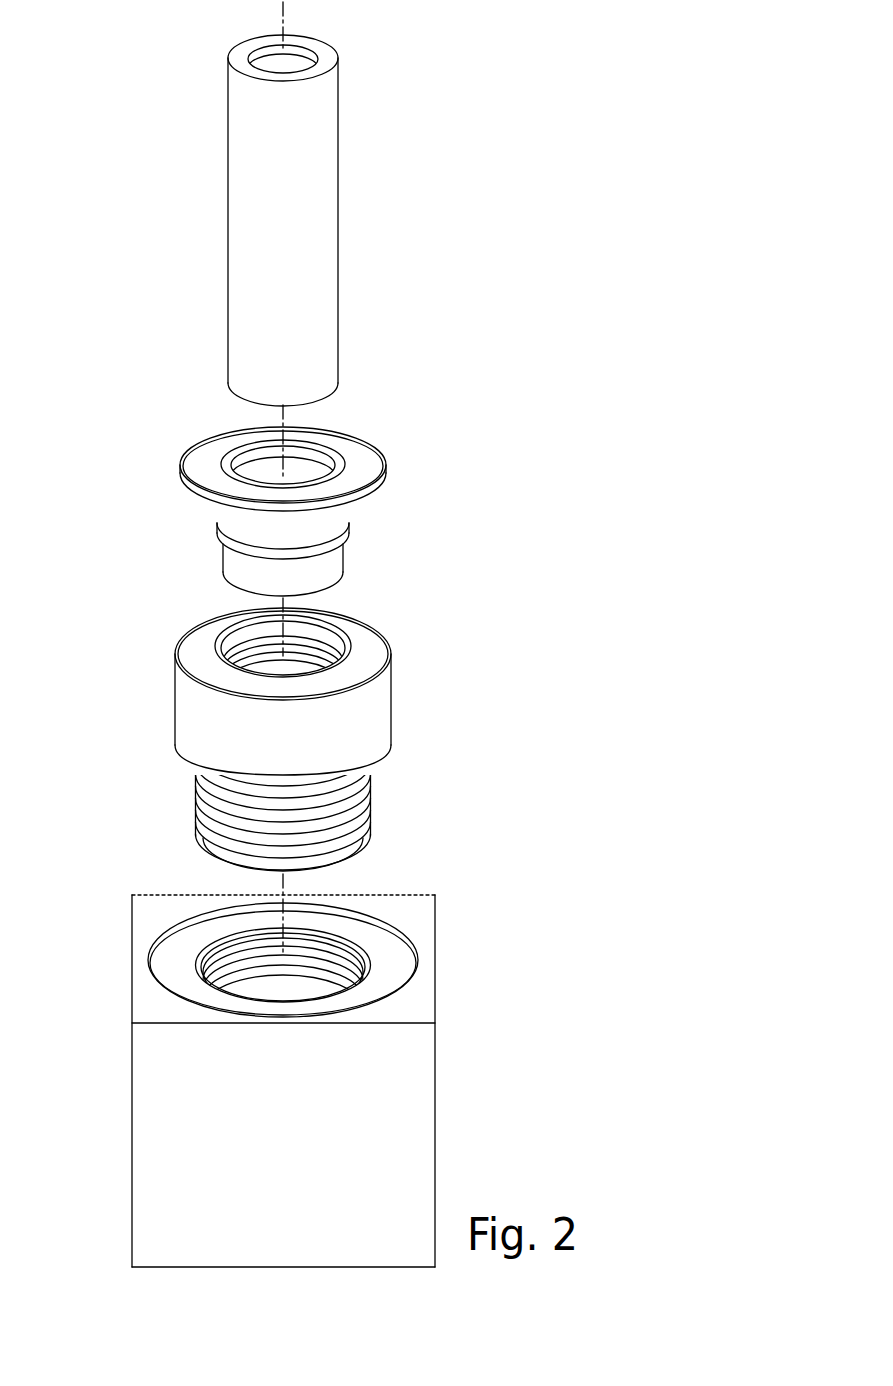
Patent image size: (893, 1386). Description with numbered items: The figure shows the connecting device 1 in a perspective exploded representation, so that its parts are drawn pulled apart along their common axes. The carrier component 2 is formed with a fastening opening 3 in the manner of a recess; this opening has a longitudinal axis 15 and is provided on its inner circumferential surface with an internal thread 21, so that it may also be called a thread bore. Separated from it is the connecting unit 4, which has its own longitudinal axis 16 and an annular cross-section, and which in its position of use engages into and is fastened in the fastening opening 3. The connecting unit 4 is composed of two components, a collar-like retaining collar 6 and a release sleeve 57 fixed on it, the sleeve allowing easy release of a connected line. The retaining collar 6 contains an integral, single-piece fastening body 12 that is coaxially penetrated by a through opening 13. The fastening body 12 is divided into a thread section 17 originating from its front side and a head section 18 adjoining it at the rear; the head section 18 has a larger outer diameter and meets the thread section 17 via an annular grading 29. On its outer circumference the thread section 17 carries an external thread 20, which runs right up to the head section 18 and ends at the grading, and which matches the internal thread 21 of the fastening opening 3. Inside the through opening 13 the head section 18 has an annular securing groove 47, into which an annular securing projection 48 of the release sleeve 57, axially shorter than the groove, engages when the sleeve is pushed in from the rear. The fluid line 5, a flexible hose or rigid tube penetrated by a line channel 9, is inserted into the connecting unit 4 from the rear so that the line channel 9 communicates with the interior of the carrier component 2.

The connecting device 1 is at (497, 272).
The carrier component 2 is at (423, 1113).
The fastening opening 3 is at (222, 983).
The connecting unit 4 is at (473, 415).
The fluid line 5 is at (310, 195).
The retaining collar 6 is at (265, 716).
The line channel 9 is at (300, 57).
The fastening body 12 is at (275, 703).
The through opening 13 is at (318, 653).
The longitudinal axis 15 is at (283, 923).
The longitudinal axis 16 is at (286, 462).
The thread section 17 is at (215, 815).
The head section 18 is at (188, 700).
The external thread 20 is at (372, 795).
The internal thread 21 is at (335, 968).
The annular grading 29 is at (190, 770).
The securing groove 47 is at (240, 650).
The securing projection 48 is at (328, 546).
The release sleeve 57 is at (173, 478).